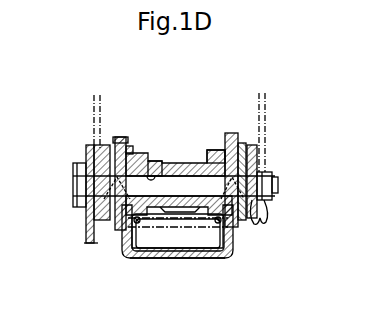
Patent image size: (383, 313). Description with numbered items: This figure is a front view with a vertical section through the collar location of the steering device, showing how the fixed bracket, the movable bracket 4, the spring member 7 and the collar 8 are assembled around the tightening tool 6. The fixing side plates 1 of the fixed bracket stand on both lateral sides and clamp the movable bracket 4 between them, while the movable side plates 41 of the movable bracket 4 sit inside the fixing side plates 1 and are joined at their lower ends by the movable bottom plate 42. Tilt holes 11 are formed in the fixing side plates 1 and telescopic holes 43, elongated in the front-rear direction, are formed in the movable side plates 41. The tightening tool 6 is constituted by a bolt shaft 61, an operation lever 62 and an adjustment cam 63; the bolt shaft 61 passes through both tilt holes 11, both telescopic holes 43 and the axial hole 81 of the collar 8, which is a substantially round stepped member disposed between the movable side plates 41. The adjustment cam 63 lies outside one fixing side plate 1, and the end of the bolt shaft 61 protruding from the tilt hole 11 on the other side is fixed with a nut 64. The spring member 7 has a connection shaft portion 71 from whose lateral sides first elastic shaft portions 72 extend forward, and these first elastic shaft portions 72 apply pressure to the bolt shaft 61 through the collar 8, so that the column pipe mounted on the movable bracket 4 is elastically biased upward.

The fixing side plate 1 is at (112, 148).
The movable bracket 4 is at (134, 133).
The tightening tool 6 is at (280, 187).
The spring member 7 is at (272, 113).
The collar 8 is at (166, 160).
The tilt hole 11 is at (246, 160).
The movable side plate 41 is at (125, 235).
The movable bottom plate 42 is at (194, 249).
The telescopic hole 43 is at (253, 166).
The bolt shaft 61 is at (188, 176).
The operation lever 62 is at (88, 240).
The adjustment cam 63 is at (100, 147).
The nut 64 is at (266, 203).
The connection shaft portion 71 is at (149, 232).
The first elastic shaft portion 72 is at (134, 259).
The axial hole 81 is at (157, 168).